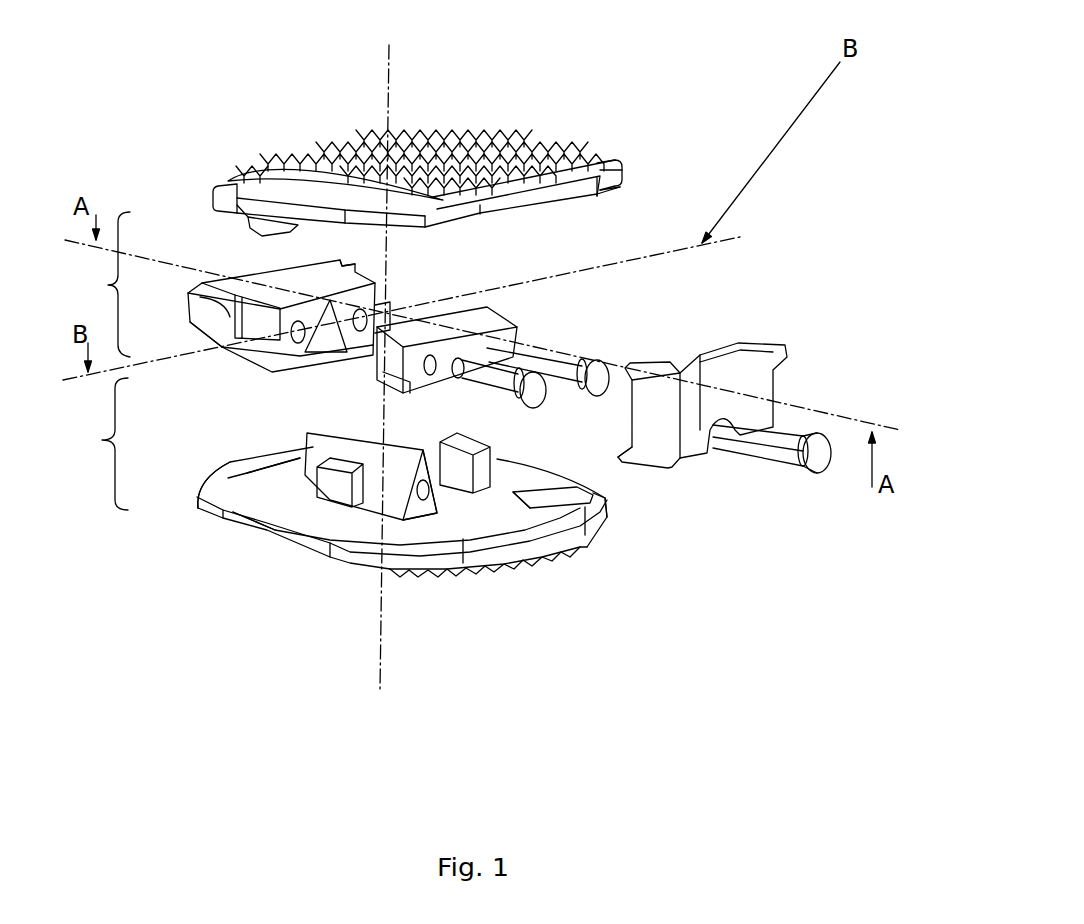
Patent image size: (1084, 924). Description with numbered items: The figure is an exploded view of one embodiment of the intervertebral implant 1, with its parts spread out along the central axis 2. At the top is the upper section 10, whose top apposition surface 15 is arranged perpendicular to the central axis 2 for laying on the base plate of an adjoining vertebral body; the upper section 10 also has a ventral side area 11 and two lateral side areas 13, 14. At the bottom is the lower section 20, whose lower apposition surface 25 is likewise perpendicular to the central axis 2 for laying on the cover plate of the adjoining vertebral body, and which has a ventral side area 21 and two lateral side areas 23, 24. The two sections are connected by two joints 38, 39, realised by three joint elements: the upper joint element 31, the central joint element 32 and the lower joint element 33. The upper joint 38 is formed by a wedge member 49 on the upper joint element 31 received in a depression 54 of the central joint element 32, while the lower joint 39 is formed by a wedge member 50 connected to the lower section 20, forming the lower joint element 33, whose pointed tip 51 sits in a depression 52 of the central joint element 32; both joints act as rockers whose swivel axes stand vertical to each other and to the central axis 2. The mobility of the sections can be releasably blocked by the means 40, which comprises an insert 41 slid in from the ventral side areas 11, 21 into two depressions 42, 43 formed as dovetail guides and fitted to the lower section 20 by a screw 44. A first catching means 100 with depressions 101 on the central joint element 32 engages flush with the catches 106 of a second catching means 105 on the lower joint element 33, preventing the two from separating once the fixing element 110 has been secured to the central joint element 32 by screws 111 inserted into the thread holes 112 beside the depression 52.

The intervertebral implant 1 is at (305, 130).
The central axis 2 is at (393, 88).
The upper section 10 is at (675, 142).
The ventral side area 11 is at (622, 178).
The lateral side area 13 is at (307, 212).
The lateral side area 14 is at (623, 178).
The top apposition surface 15 is at (620, 172).
The lower section 20 is at (652, 550).
The ventral side area 21 is at (605, 527).
The lateral side area 23 is at (283, 530).
The lateral side area 24 is at (612, 508).
The lower apposition surface 25 is at (600, 522).
The upper joint element 31 is at (263, 207).
The central joint element 32 is at (262, 290).
The lower joint element 33 is at (300, 452).
The upper joint 38 is at (224, 292).
The lower joint 39 is at (99, 444).
The means 40 is at (783, 345).
The insert 41 is at (750, 392).
The depression 42 is at (600, 196).
The depression 43 is at (563, 518).
The screw 44 is at (777, 442).
The wedge member 49 is at (236, 207).
The wedge member 50 is at (300, 447).
The pointed tip 51 is at (325, 440).
The depression 52 is at (222, 347).
The depression 54 is at (300, 265).
The first catching means 100 is at (227, 327).
The depressions 101 is at (200, 290).
The second catching means 105 is at (308, 483).
The catches 106 is at (357, 480).
The fixing element 110 is at (487, 315).
The screws 111 is at (606, 356).
The thread holes 112 is at (390, 308).